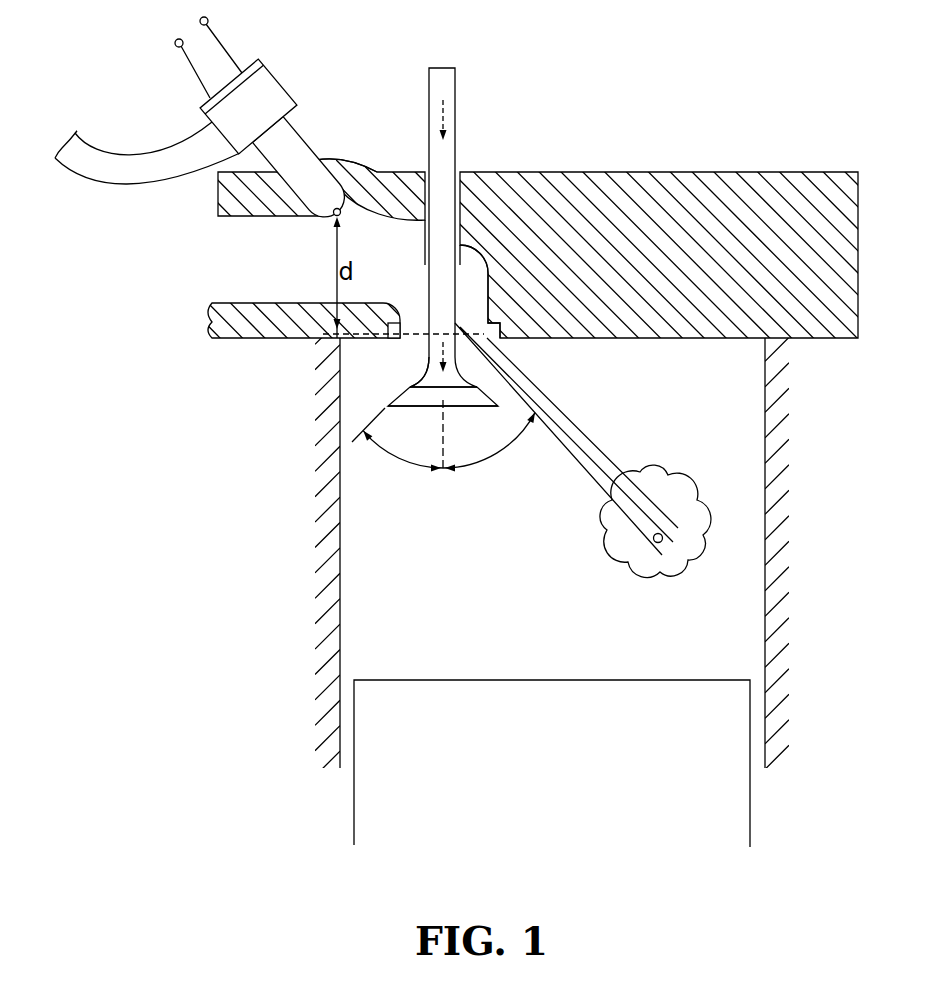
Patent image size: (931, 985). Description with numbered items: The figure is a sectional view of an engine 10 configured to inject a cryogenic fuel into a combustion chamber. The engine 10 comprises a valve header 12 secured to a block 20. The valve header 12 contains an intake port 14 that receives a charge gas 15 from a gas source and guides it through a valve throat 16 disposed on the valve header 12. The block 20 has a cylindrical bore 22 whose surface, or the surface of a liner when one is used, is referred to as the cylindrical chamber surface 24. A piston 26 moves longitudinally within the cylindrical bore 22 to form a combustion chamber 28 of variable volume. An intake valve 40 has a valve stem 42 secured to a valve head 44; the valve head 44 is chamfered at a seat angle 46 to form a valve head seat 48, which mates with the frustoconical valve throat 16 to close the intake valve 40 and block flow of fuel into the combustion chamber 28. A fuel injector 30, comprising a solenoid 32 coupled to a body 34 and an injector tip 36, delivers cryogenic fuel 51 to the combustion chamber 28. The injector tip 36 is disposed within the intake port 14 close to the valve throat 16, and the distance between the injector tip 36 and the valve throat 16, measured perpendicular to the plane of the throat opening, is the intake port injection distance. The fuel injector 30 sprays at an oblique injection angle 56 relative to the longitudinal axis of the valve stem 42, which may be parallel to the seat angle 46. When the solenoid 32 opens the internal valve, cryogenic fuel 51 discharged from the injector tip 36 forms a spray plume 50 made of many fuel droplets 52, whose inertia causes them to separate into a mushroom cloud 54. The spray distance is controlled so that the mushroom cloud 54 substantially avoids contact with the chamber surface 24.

The engine 10 is at (167, 463).
The valve header 12 is at (646, 168).
The intake port 14 is at (243, 282).
The charge gas 15 is at (195, 258).
The valve throat 16 is at (418, 335).
The block 20 is at (305, 617).
The cylindrical bore 22 is at (410, 632).
The cylindrical chamber surface 24 is at (765, 473).
The piston 26 is at (530, 786).
The combustion chamber 28 is at (419, 632).
The fuel injector 30 is at (302, 116).
The solenoid 32 is at (280, 84).
The body 34 is at (338, 162).
The injector tip 36 is at (336, 216).
The intake valve 40 is at (443, 292).
The valve stem 42 is at (452, 89).
The valve head 44 is at (476, 400).
The seat angle 46 is at (396, 455).
The valve head seat 48 is at (403, 388).
The spray plume 50 is at (612, 452).
The cryogenic fuel 51 is at (57, 136).
The fuel droplets 52 is at (655, 543).
The mushroom cloud 54 is at (608, 542).
The injection angle 56 is at (500, 453).